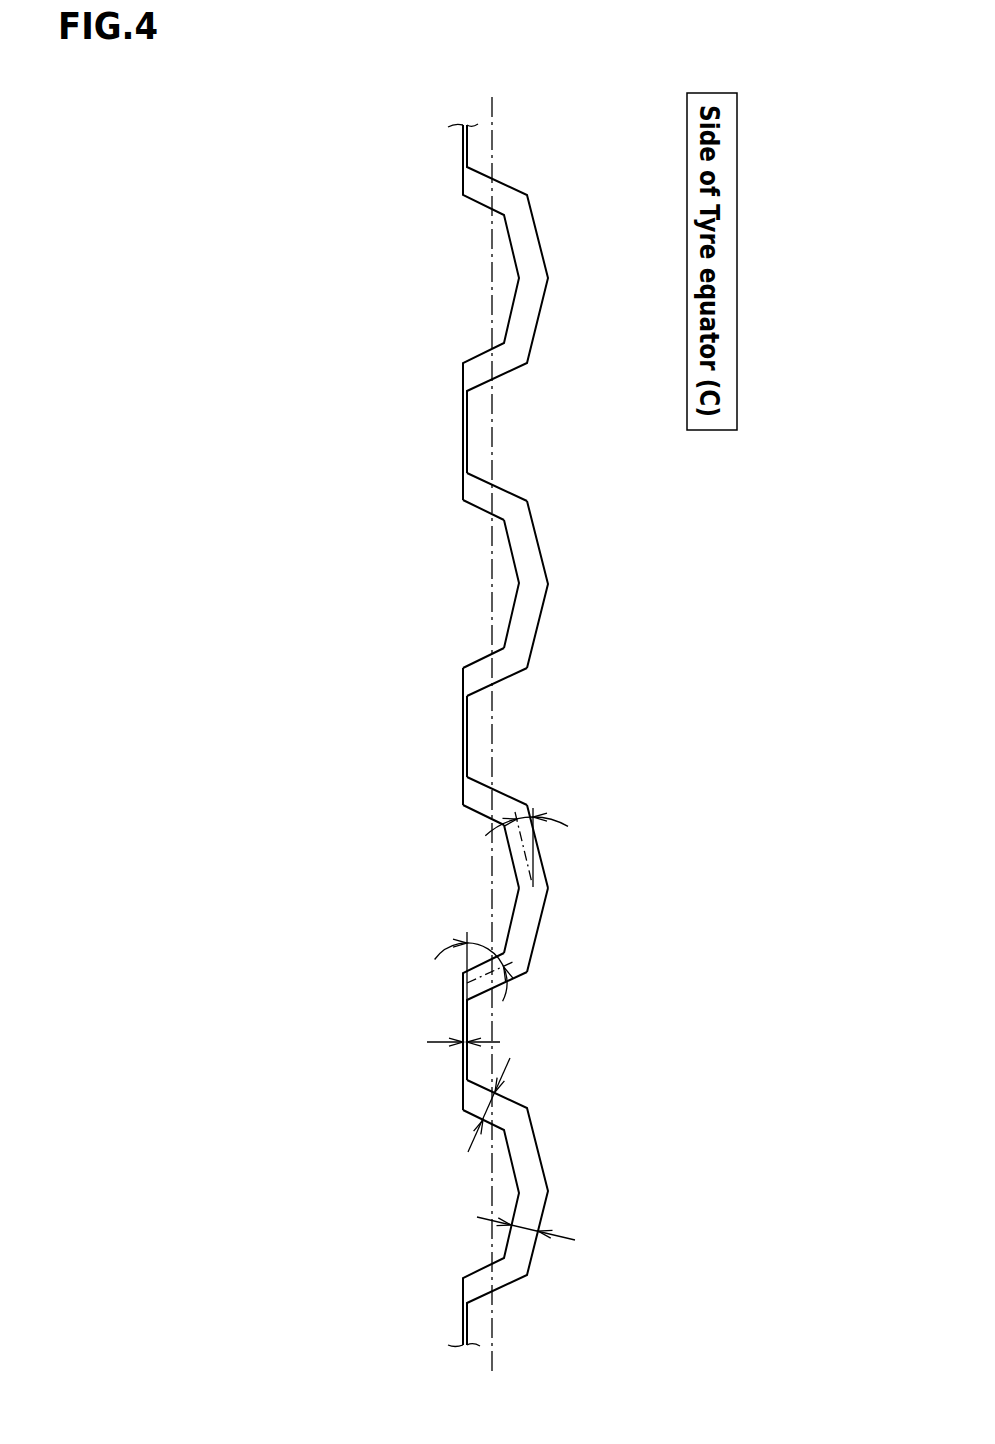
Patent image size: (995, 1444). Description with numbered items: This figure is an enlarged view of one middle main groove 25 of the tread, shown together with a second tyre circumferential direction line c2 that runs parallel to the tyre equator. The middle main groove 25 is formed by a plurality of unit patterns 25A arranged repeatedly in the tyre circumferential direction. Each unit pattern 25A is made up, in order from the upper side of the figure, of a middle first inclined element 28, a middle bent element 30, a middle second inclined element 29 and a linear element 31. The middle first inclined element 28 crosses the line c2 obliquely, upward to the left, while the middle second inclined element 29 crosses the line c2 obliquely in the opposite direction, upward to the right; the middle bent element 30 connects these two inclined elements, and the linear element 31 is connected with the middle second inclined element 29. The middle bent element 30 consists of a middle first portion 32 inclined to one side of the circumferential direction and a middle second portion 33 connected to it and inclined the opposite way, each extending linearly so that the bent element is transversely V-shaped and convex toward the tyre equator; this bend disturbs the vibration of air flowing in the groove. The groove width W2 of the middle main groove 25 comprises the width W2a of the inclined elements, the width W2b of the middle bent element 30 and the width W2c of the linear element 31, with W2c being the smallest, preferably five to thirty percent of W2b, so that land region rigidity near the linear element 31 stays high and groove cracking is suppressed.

The middle main groove 25 is at (394, 707).
The unit pattern 25A is at (394, 721).
The middle first inclined element 28 is at (477, 491).
The middle bent element 30 is at (405, 736).
The middle second inclined element 29 is at (480, 677).
The linear element 31 is at (393, 736).
The middle first portion 32 is at (513, 857).
The middle second portion 33 is at (525, 926).
The groove width of the middle main groove W2 is at (595, 1105).
The groove width of the middle first and second inclined elements W2a is at (492, 1110).
The groove width of the middle bent element W2b is at (527, 1232).
The groove width of the linear element W2c is at (463, 1047).
The second tyre circumferential direction line c2 is at (492, 100).